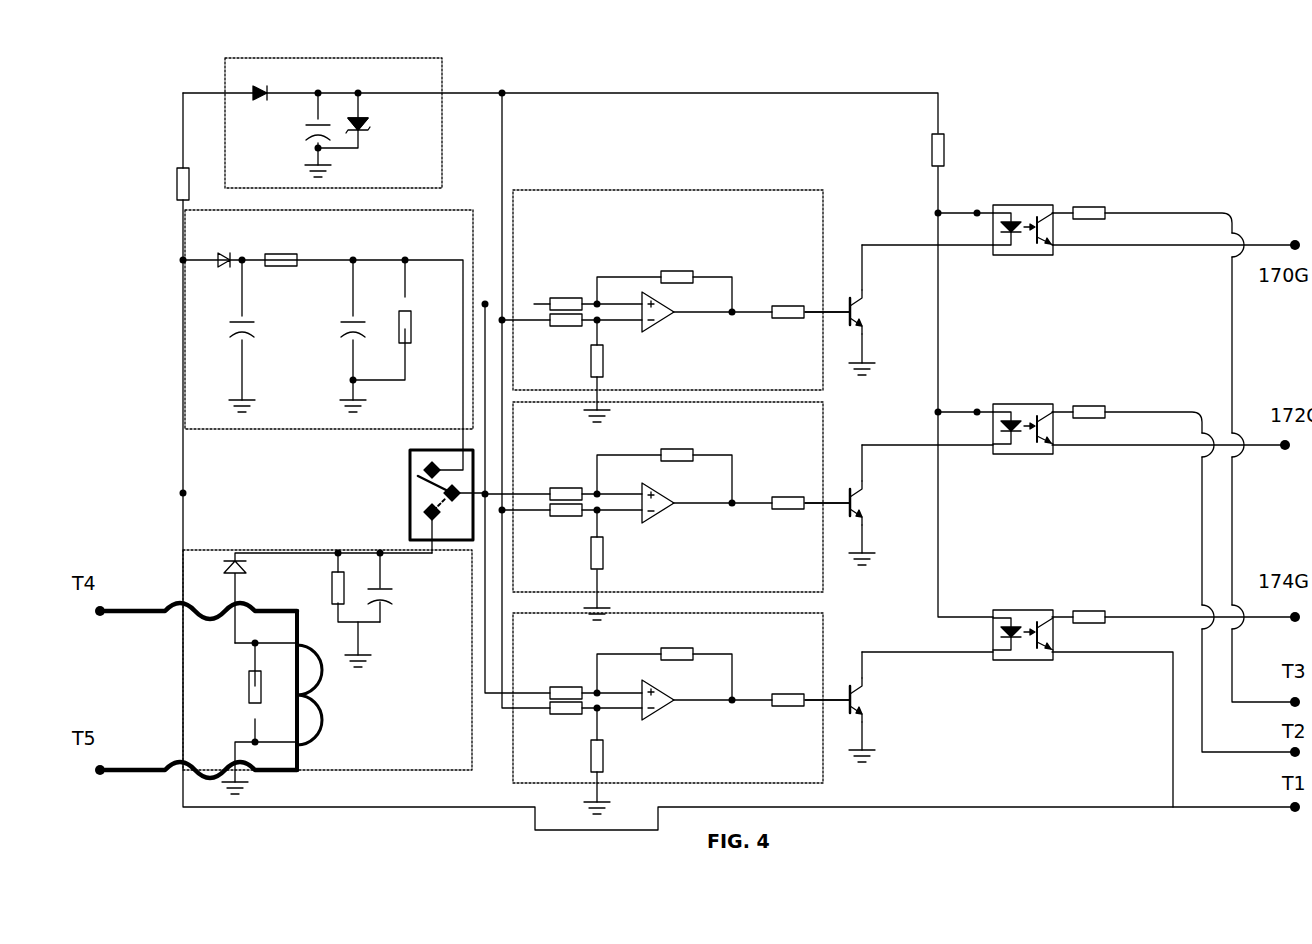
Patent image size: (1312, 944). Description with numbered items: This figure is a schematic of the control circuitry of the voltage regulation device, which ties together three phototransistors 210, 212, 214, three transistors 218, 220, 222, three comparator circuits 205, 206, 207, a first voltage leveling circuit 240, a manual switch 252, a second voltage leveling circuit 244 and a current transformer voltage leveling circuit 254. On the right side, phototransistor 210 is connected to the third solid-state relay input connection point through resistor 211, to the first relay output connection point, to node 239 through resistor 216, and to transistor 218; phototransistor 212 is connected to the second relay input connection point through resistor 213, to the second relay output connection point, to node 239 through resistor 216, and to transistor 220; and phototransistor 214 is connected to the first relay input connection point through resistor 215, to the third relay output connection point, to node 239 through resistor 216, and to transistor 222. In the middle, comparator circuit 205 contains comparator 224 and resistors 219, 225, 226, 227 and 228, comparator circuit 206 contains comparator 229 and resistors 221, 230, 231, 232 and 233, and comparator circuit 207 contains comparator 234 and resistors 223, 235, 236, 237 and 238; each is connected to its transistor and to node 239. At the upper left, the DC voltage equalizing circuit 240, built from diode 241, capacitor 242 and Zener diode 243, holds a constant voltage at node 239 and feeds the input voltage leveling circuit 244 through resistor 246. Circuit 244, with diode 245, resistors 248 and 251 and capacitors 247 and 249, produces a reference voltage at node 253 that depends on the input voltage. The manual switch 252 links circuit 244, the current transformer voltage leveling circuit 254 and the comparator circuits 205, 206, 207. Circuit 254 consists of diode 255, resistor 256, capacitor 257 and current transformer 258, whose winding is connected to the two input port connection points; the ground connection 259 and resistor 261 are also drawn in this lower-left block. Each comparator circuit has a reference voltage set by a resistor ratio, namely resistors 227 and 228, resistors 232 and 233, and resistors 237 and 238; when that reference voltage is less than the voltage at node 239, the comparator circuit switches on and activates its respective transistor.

The comparator circuit 205 is at (668, 190).
The comparator circuit 206 is at (818, 410).
The comparator circuit 207 is at (818, 622).
The phototransistor 210 is at (1020, 205).
The resistor 211 is at (1099, 207).
The phototransistor 212 is at (1018, 404).
The resistor 213 is at (1099, 406).
The phototransistor 214 is at (1018, 610).
The resistor 215 is at (1099, 612).
The resistor 216 is at (933, 143).
The transistor 218 is at (859, 310).
The resistor 219 is at (786, 322).
The transistor 220 is at (859, 505).
The resistor 221 is at (786, 512).
The transistor 222 is at (859, 707).
The resistor 223 is at (786, 708).
The comparator 224 is at (660, 290).
The resistor 225 is at (685, 270).
The resistor 226 is at (576, 298).
The resistor 227 is at (566, 330).
The resistor 228 is at (605, 360).
The comparator 229 is at (668, 490).
The resistor 230 is at (690, 450).
The resistor 231 is at (568, 489).
The resistor 232 is at (568, 528).
The resistor 233 is at (605, 553).
The comparator 234 is at (665, 690).
The resistor 235 is at (700, 652).
The resistor 236 is at (573, 688).
The resistor 237 is at (563, 720).
The resistor 238 is at (605, 748).
The node 239 is at (502, 88).
The first voltage leveling circuit 240 is at (225, 80).
The diode 241 is at (268, 92).
The capacitor 242 is at (297, 122).
The Zener diode 243 is at (372, 120).
The second voltage leveling circuit 244 is at (275, 430).
The diode 245 is at (205, 258).
The resistor 246 is at (178, 178).
The capacitor 247 is at (257, 325).
The resistor 248 is at (290, 255).
The capacitor 249 is at (335, 326).
The resistor 251 is at (412, 322).
The manual switch 252 is at (410, 462).
The node 253 is at (420, 510).
The current transformer voltage leveling circuit 254 is at (358, 775).
The diode 255 is at (228, 558).
The resistor 256 is at (326, 566).
The capacitor 257 is at (397, 592).
The current transformer 258 is at (330, 708).
The ground connection 259 is at (212, 743).
The resistor 261 is at (247, 700).